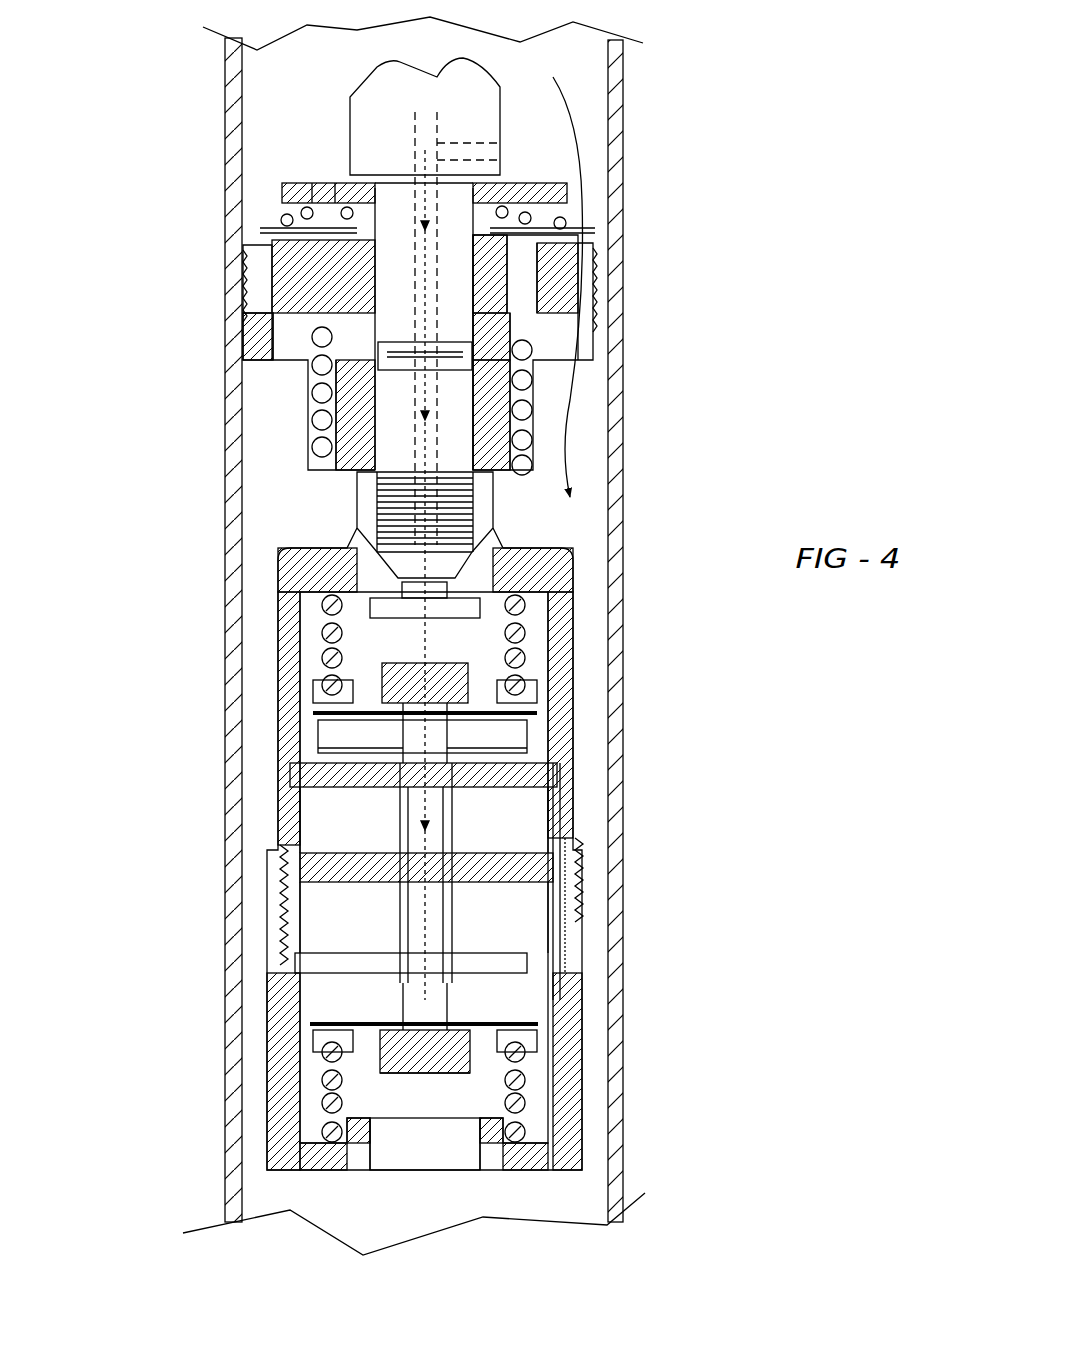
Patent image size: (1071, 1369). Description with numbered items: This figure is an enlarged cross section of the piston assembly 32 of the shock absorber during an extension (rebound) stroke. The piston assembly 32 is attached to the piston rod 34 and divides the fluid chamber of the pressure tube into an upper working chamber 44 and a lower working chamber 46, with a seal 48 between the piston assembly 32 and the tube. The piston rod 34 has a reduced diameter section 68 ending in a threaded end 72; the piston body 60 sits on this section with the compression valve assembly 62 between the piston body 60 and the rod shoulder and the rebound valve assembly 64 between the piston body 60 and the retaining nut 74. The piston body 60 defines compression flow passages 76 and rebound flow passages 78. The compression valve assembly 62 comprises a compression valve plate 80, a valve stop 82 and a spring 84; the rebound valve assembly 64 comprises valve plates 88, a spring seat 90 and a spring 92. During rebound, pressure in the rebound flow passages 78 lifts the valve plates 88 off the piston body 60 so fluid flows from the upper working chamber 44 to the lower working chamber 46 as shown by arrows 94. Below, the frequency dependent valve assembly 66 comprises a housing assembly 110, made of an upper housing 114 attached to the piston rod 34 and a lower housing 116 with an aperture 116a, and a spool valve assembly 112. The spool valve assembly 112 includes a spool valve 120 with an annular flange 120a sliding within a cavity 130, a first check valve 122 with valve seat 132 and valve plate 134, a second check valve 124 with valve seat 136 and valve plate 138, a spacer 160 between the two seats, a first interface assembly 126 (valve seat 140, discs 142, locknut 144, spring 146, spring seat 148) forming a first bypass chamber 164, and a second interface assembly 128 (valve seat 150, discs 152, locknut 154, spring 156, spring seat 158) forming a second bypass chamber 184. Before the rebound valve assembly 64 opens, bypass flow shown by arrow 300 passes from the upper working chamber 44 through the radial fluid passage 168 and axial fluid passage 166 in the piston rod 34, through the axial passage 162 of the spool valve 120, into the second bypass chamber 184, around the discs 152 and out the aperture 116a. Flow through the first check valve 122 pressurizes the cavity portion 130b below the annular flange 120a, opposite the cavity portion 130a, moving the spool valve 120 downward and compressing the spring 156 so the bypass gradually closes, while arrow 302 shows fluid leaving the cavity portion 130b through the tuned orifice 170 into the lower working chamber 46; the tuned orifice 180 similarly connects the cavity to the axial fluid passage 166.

The piston assembly 32 is at (197, 43).
The piston rod 34 is at (382, 110).
The upper working chamber 44 is at (302, 71).
The lower working chamber 46 is at (380, 1219).
The seal 48 is at (603, 292).
The piston body 60 is at (600, 265).
The compression valve assembly 62 is at (592, 148).
The rebound valve assembly 64 is at (260, 375).
The frequency dependent valve assembly 66 is at (593, 907).
The reduced diameter section 68 is at (273, 287).
The threaded end 72 is at (453, 510).
The retaining nut 74 is at (520, 462).
The compression flow passages 76 is at (248, 283).
The rebound flow passages 78 is at (567, 213).
The compression valve plate 80 is at (292, 267).
The valve stop 82 is at (282, 208).
The spring 84 is at (287, 200).
The valve plates 88 is at (293, 302).
The spring seat 90 is at (607, 333).
The spring 92 is at (430, 400).
The arrows 94 is at (505, 471).
The housing assembly 110 is at (258, 717).
The spool valve assembly 112 is at (330, 912).
The upper housing 114 is at (555, 690).
The lower housing 116 is at (548, 1103).
The aperture 116a is at (470, 1100).
The spool valve 120 is at (543, 870).
The annular flange 120a is at (282, 845).
The first check valve 122 is at (323, 797).
The second check valve 124 is at (520, 936).
The first interface assembly 126 is at (520, 700).
The second interface assembly 128 is at (330, 965).
The cavity 130 is at (505, 833).
The central tube 130a is at (510, 820).
The cavity portion 130b is at (300, 940).
The valve seat 132 is at (515, 737).
The valve plate 134 is at (300, 830).
The valve seat 136 is at (290, 1003).
The valve plate 138 is at (543, 920).
The valve seat 140 is at (320, 743).
The plurality of discs 142 is at (318, 708).
The locknut 144 is at (540, 670).
The spring 146 is at (570, 660).
The spring seat 148 is at (320, 680).
The valve seat 150 is at (527, 1017).
The plurality of discs 152 is at (530, 1027).
The locknut 154 is at (393, 1057).
The spring 156 is at (515, 1105).
The spring seat 158 is at (525, 1060).
The spacer 160 is at (300, 850).
The axial passage 162 is at (327, 930).
The first bypass chamber 164 is at (570, 707).
The axial fluid passage 166 is at (527, 410).
The radial fluid passage 168 is at (467, 147).
The tuned orifice 170 is at (550, 968).
The tuned orifice 180 is at (537, 770).
The second bypass chamber 184 is at (350, 1010).
The arrow 300 is at (437, 633).
The arrow 302 is at (533, 1087).